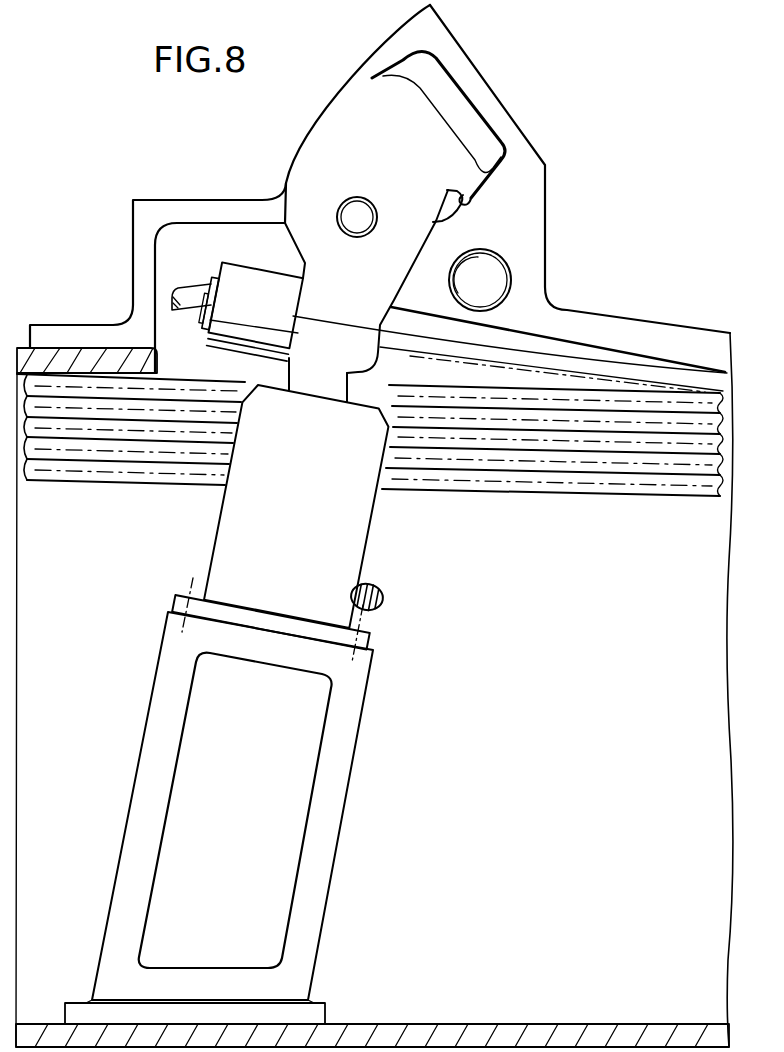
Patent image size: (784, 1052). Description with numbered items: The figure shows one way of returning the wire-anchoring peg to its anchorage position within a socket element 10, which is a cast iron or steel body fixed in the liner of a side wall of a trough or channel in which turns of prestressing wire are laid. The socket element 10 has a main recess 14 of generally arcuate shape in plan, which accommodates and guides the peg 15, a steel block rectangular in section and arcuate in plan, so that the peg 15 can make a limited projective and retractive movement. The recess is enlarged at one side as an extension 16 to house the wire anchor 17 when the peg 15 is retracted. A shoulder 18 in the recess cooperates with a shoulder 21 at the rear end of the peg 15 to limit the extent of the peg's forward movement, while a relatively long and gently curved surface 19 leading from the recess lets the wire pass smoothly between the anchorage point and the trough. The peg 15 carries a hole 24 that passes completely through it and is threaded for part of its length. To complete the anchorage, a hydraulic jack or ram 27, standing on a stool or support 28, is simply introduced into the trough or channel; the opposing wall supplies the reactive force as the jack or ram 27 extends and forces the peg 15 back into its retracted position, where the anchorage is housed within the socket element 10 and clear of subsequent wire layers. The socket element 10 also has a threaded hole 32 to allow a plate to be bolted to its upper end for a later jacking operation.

The socket element 10 is at (510, 90).
The main recess 14 is at (447, 86).
The peg 15 is at (443, 157).
The enlargement or extension of the main recess 16 is at (190, 232).
The wire anchor 17 is at (258, 290).
The shoulder 18 is at (440, 221).
The curved surface 19 is at (593, 337).
The shoulder 21 is at (470, 205).
The hole 24 is at (360, 198).
The hydraulic jack or ram 27 is at (360, 541).
The stool or support 28 is at (337, 774).
The threaded hole 32 is at (507, 270).